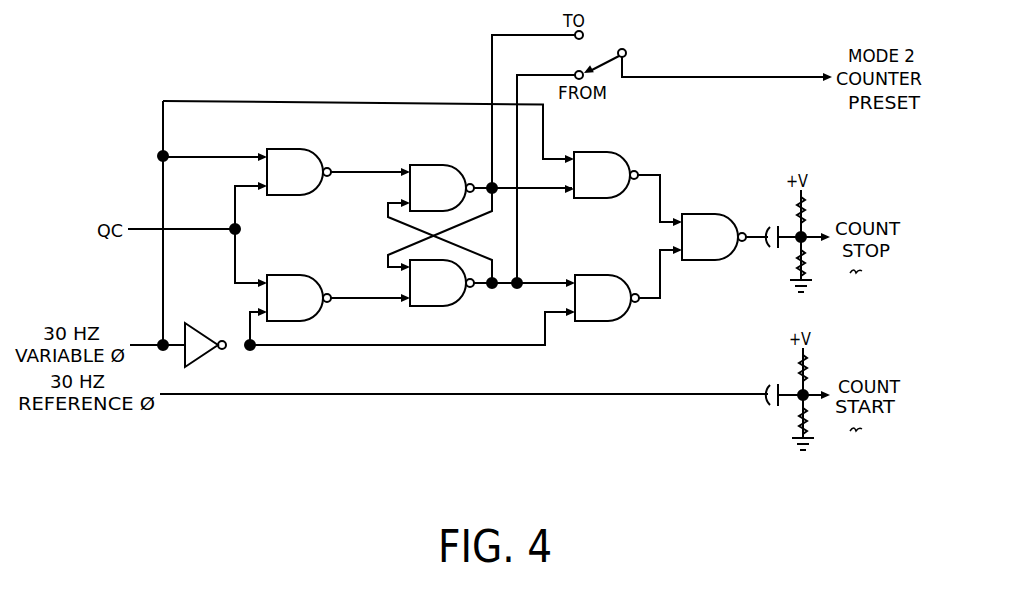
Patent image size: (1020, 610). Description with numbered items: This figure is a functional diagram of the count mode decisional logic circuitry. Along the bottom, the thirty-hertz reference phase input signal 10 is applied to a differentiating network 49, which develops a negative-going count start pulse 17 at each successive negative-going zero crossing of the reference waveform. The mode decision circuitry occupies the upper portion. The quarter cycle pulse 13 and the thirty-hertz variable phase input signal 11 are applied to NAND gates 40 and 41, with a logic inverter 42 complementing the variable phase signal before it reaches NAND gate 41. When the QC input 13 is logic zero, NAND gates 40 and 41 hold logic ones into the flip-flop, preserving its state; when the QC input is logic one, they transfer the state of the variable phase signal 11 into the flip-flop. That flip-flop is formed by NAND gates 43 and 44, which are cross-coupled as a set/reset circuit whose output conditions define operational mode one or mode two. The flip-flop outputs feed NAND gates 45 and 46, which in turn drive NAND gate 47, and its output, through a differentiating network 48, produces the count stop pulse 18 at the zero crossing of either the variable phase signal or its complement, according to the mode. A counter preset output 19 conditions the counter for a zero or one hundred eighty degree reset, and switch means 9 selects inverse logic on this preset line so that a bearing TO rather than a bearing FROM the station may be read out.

The switch means 9 is at (602, 50).
The 30-Hz reference phase input signal 10 is at (198, 393).
The 30-Hz variable phase input signal 11 is at (149, 344).
The quarter cycle (QC) pulse 13 is at (148, 228).
The count start pulse 17 is at (811, 388).
The count stop pulse 18 is at (808, 230).
The counter preset output 19 is at (772, 77).
The NAND gate 40 is at (315, 196).
The NAND gate 41 is at (321, 275).
The logic inverter 42 is at (208, 334).
The NAND gate 43 is at (455, 165).
The NAND gate 44 is at (441, 307).
The NAND gate 45 is at (600, 152).
The NAND gate 46 is at (599, 275).
The NAND gate 47 is at (705, 214).
The differentiating network 48 is at (790, 248).
The differentiating network 49 is at (795, 405).